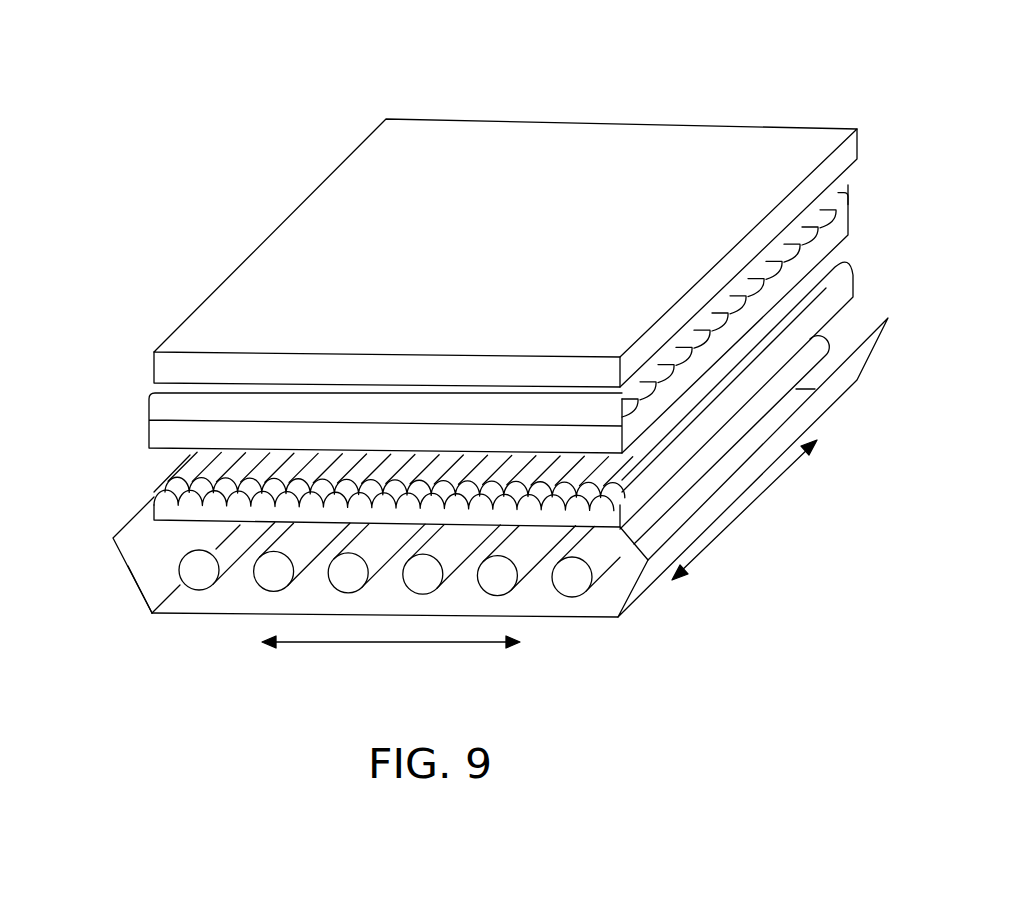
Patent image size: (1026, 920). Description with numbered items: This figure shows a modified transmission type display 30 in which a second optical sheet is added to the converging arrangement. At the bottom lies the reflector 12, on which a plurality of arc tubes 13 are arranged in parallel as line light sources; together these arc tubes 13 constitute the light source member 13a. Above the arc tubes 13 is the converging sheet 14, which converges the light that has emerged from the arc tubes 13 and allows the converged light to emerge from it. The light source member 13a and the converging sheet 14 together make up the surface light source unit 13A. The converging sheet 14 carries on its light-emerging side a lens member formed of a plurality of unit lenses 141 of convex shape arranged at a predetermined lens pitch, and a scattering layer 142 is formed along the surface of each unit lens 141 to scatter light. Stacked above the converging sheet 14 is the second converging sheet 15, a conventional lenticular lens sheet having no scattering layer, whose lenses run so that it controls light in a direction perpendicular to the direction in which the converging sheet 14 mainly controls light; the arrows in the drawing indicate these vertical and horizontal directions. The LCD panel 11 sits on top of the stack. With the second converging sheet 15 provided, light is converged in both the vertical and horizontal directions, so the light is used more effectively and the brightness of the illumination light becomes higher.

The backlight unit 30 is at (736, 90).
The LCD panel 11 is at (154, 365).
The second converging sheet 15 is at (149, 433).
The converging sheet 14 is at (165, 522).
The unit lens 141 is at (624, 516).
The scattering layer 142 is at (647, 458).
The surface light source unit 13A is at (86, 571).
The arc tube 13 is at (197, 591).
The light source member 13a is at (167, 575).
The reflector 12 is at (233, 616).